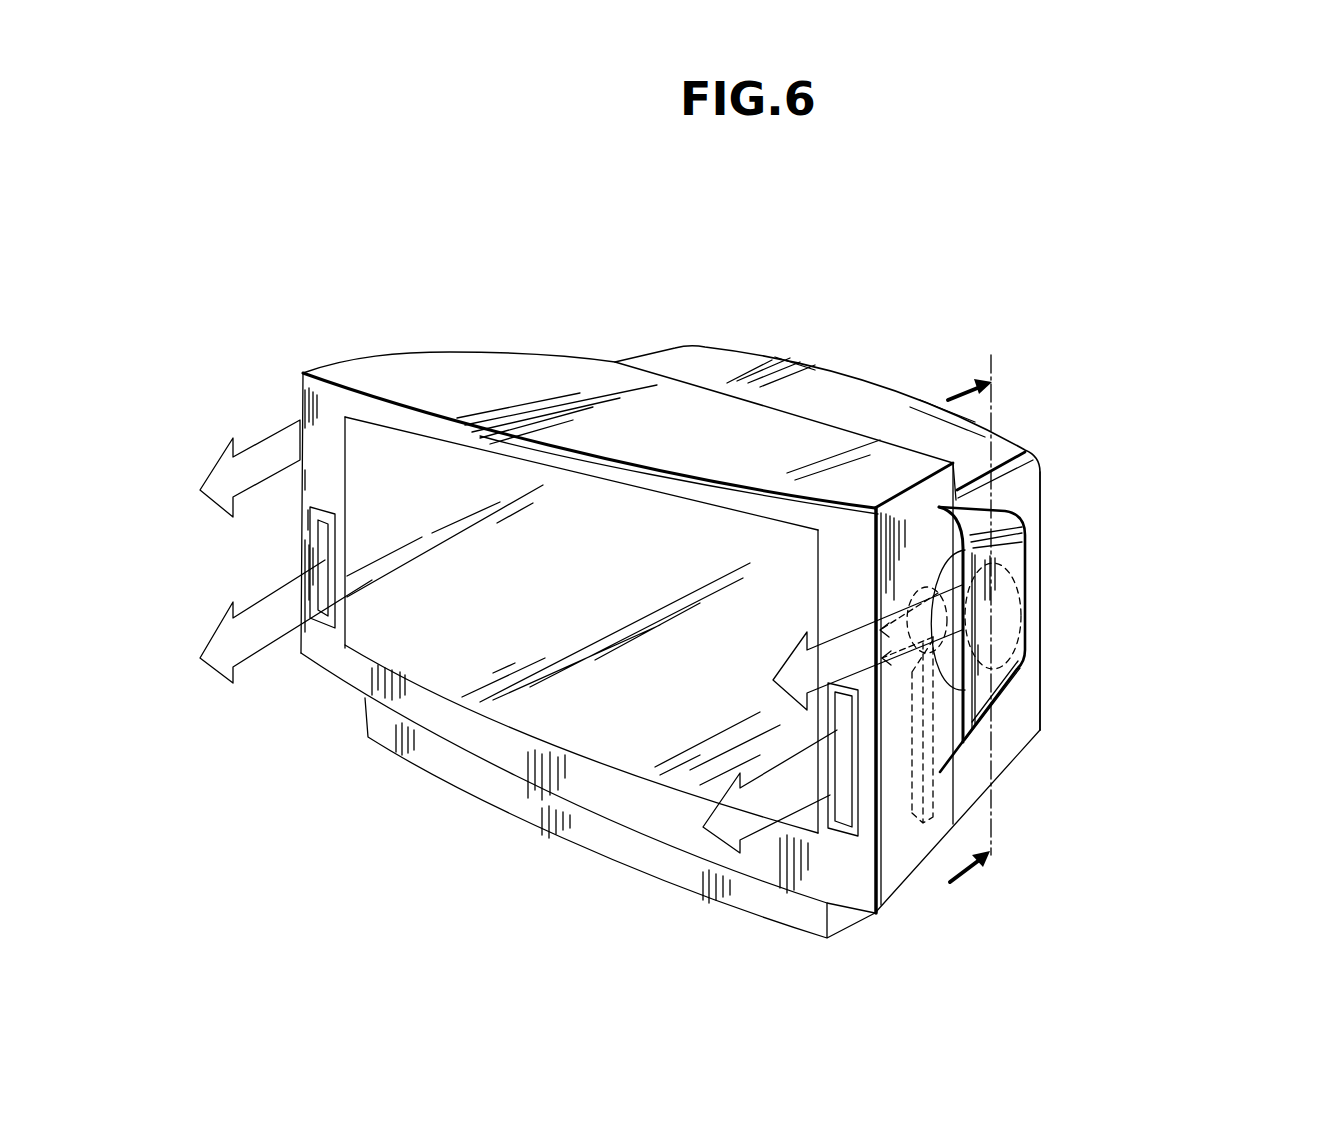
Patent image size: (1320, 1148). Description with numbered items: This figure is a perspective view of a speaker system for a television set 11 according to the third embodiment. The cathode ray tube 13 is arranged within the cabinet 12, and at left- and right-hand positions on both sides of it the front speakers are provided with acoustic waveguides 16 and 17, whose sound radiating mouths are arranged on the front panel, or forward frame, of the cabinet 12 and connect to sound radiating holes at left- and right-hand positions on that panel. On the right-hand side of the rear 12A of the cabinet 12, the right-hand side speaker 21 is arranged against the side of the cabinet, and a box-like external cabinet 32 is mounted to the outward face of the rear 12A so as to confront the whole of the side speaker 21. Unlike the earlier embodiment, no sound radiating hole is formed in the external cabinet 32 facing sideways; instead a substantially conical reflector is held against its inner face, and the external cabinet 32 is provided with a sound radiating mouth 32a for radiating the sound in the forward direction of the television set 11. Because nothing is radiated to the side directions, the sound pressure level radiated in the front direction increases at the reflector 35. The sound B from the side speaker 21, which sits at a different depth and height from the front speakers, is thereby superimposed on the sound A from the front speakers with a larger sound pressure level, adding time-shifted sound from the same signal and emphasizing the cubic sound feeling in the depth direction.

The television set 11 is at (679, 320).
The cabinet 12 is at (431, 368).
The rear of the cabinet 12A is at (1015, 745).
The cathode ray tube 13 is at (503, 706).
The acoustic waveguide 16 is at (357, 602).
The acoustic waveguide 17 is at (887, 807).
The right-hand side speaker 21 is at (950, 577).
The external cabinet 32 is at (1017, 543).
The sound radiating mouth 32a is at (953, 743).
The reflector 35 is at (957, 623).